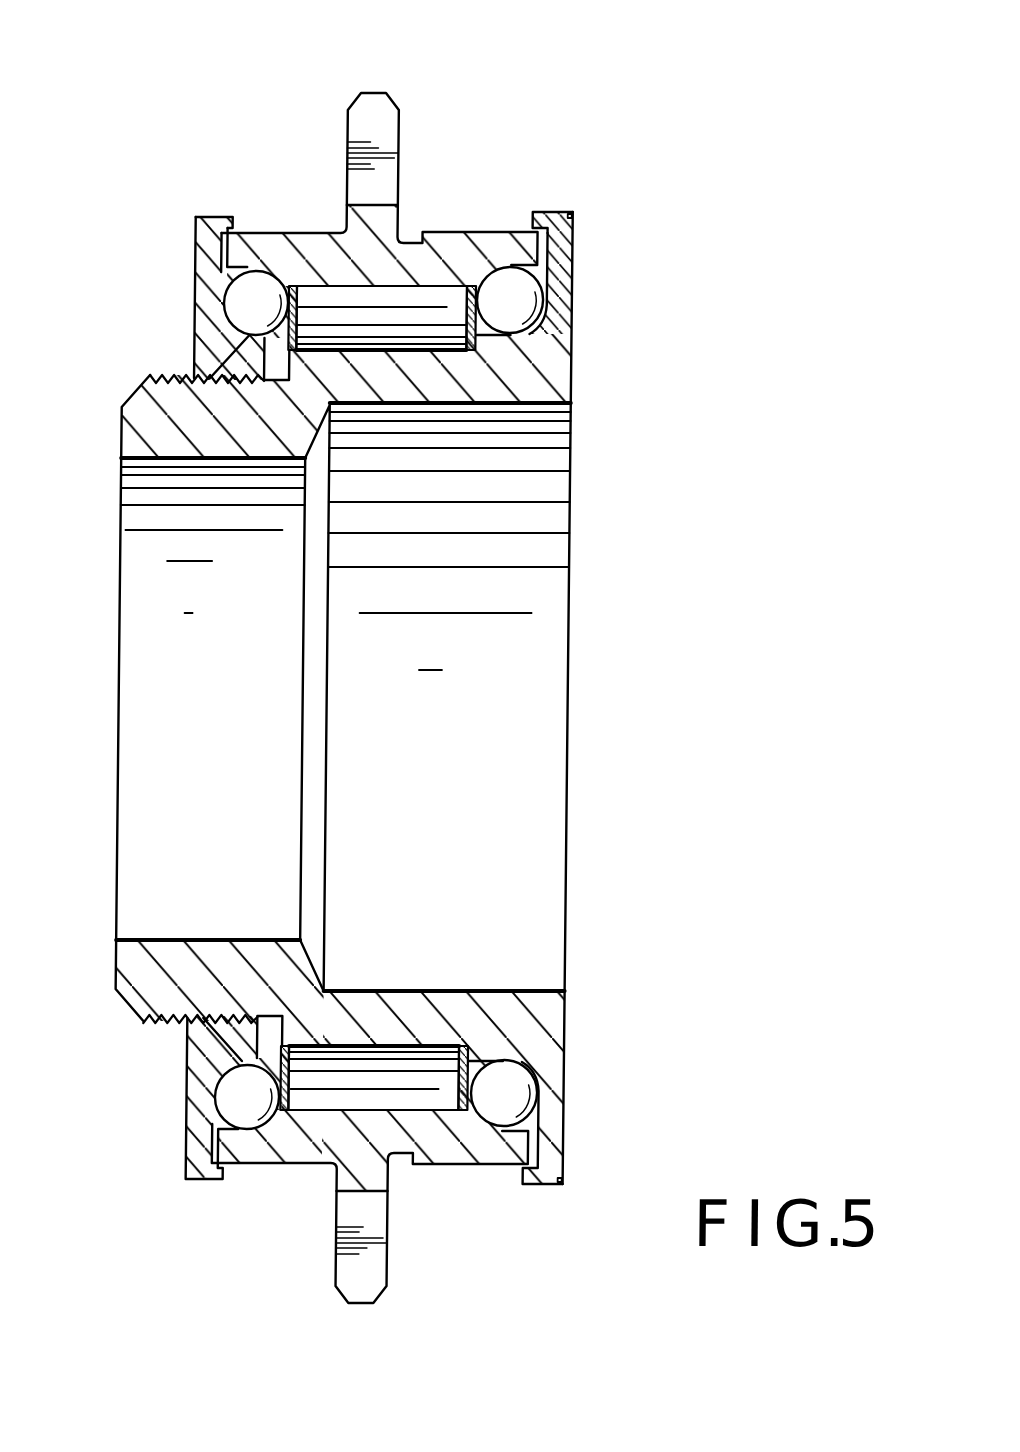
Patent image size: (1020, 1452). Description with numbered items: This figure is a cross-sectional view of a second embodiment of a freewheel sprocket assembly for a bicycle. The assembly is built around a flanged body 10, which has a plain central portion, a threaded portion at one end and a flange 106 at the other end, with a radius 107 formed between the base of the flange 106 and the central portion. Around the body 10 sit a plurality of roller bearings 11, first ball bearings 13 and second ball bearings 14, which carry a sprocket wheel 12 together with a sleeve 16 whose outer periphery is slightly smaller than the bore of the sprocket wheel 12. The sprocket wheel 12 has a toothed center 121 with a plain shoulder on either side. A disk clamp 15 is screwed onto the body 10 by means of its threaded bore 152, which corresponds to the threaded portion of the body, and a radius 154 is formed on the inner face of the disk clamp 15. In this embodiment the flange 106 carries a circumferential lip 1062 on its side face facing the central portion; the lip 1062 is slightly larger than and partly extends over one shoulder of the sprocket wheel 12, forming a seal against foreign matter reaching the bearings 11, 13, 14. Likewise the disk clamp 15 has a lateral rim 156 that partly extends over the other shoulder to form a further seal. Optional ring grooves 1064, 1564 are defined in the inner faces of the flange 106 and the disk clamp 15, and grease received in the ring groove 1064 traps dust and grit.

The flanged body 10 is at (374, 357).
The roller bearings 11 is at (450, 285).
The sprocket wheel 12 is at (390, 230).
The toothed center 121 is at (368, 100).
The first ball bearings 13 is at (546, 313).
The second ball bearings 14 is at (246, 300).
The disk clamp 15 is at (209, 357).
The threaded bore 152 is at (184, 1022).
The radius 154 is at (248, 1098).
The lateral rim 156 is at (224, 220).
The ring groove 1564 is at (215, 231).
The sleeve 16 is at (291, 362).
The flange 106 is at (580, 240).
The circumferential lip 1062 is at (535, 218).
The ring groove 1064 is at (570, 215).
The radius 107 is at (546, 1087).